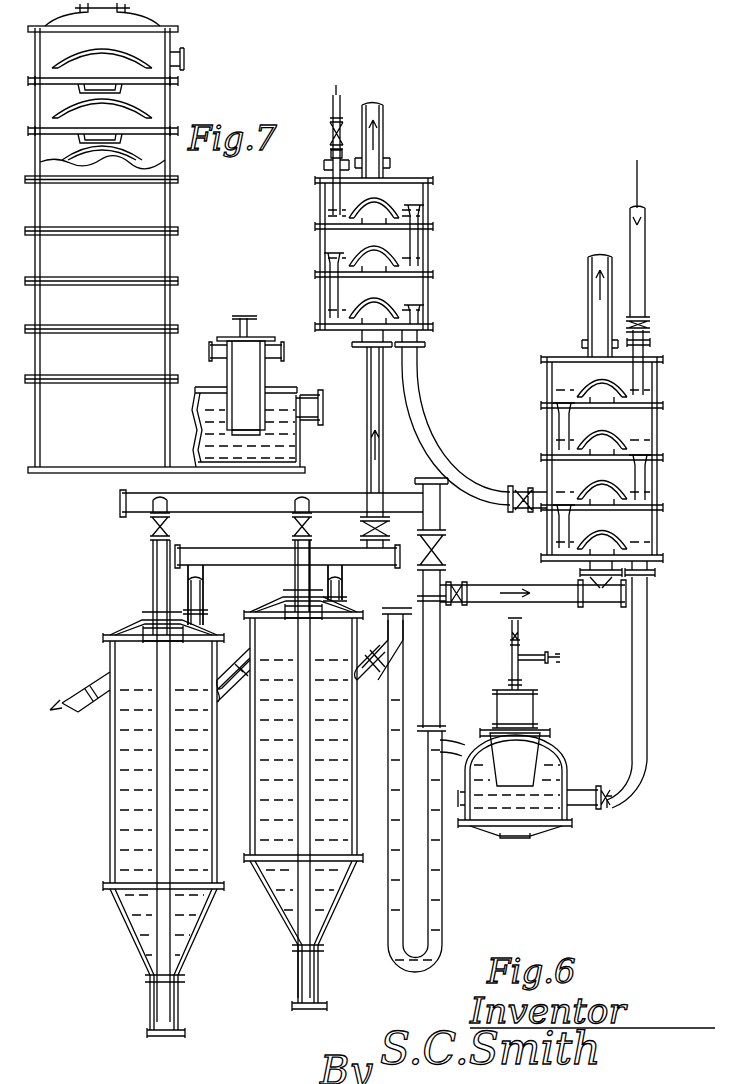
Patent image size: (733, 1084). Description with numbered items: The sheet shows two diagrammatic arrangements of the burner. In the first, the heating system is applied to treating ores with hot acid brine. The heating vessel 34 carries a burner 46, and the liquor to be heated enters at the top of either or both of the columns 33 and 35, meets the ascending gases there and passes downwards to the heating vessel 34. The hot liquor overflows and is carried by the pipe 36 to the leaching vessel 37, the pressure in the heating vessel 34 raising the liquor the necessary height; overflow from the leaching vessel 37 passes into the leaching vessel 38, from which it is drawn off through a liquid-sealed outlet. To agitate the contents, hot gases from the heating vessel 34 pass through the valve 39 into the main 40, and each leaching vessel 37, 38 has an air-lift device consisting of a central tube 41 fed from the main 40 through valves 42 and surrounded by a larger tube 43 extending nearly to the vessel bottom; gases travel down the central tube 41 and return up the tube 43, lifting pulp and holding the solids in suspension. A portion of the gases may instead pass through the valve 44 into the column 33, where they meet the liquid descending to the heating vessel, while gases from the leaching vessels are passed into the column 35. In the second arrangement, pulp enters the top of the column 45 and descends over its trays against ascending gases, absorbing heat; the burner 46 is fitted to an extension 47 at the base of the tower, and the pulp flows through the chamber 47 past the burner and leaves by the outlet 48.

In FIG. 6, the column 33 is at (547, 430).
In FIG. 6, the heating vessel 34 is at (567, 757).
In FIG. 6, the column 35 is at (380, 290).
In FIG. 6, the pipe 36 is at (442, 930).
In FIG. 6, the leaching vessel 37 is at (272, 905).
In FIG. 6, the leaching vessel 38 is at (150, 825).
In FIG. 6, the valve 39 is at (440, 542).
In FIG. 6, the main 40 is at (212, 502).
In FIG. 6, the central tube 41 is at (157, 665).
In FIG. 6, the valve 42 is at (158, 526).
In FIG. 6, the tube 43 is at (187, 665).
In FIG. 6, the valve 44 is at (460, 593).
In FIG. 7, the column 45 is at (155, 200).
In FIG. 7, the burner 46 is at (240, 352).
In FIG. 6, the burner 46 is at (518, 708).
In FIG. 7, the extension 47 is at (215, 447).
In FIG. 7, the outlet 48 is at (305, 405).